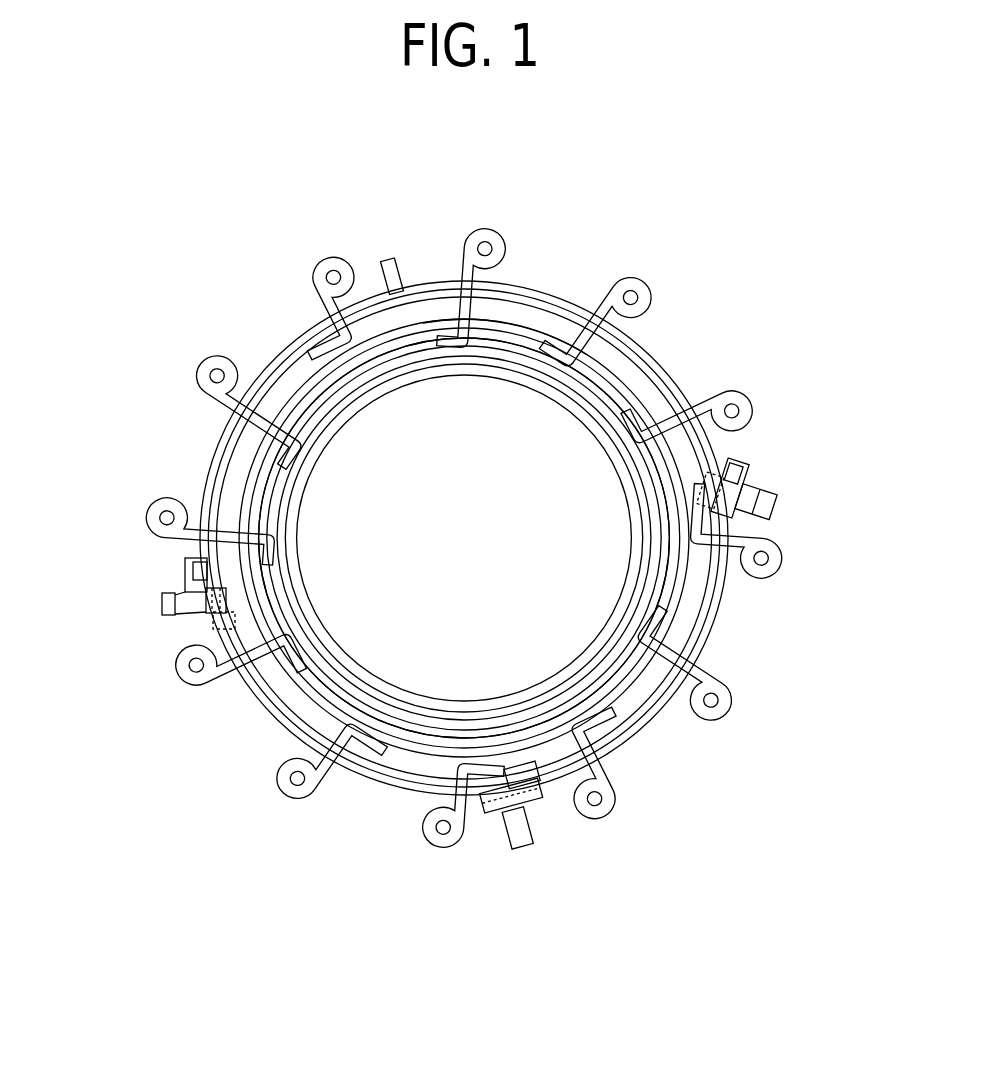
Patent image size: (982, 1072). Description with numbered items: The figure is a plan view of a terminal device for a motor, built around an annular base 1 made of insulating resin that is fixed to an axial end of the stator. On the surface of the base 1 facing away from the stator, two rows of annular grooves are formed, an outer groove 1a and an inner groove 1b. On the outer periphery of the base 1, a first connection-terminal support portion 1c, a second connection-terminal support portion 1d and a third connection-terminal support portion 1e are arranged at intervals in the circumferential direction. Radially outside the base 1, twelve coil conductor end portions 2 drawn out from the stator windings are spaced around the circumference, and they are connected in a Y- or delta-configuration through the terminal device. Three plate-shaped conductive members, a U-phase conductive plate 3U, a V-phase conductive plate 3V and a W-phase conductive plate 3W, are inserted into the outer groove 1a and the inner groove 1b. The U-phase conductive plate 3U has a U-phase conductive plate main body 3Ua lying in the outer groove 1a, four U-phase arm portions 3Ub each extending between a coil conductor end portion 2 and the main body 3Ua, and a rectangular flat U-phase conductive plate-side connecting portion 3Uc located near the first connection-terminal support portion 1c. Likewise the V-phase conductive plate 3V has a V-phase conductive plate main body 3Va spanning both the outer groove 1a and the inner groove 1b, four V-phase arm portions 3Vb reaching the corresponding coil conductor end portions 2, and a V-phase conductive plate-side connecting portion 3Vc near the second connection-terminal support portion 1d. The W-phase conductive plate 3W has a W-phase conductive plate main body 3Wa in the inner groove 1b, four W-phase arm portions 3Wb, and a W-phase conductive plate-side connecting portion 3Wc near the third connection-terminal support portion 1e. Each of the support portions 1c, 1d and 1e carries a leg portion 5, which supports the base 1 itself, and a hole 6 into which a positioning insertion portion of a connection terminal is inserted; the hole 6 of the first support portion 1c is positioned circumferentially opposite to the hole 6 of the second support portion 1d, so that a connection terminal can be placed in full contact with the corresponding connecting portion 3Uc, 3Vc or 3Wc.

The base 1 is at (425, 280).
The outer groove 1a is at (372, 293).
The inner groove 1b is at (427, 337).
The first connection-terminal support portion 1c is at (187, 570).
The second connection-terminal support portion 1d is at (743, 470).
The third connection-terminal support portion 1e is at (497, 822).
The coil conductor end portion 2 is at (633, 297).
The U-phase conductive plate 3U is at (528, 313).
The U-phase conductive plate main body 3Ua is at (288, 383).
The U-phase arm portion 3Ub is at (333, 268).
The U-phase conductive plate-side connecting portion 3Uc is at (207, 610).
The V-phase conductive plate 3V is at (640, 387).
The V-phase conductive plate main body 3Va is at (655, 332).
The V-phase arm portion 3Vb is at (778, 567).
The V-phase conductive plate-side connecting portion 3Vc is at (757, 520).
The W-phase conductive plate 3W is at (300, 650).
The W-phase conductive plate main body 3Wa is at (328, 665).
The W-phase arm portion 3Wb is at (304, 806).
The W-phase conductive plate-side connecting portion 3Wc is at (492, 803).
The leg portion 5 is at (163, 600).
The hole 6 is at (200, 580).